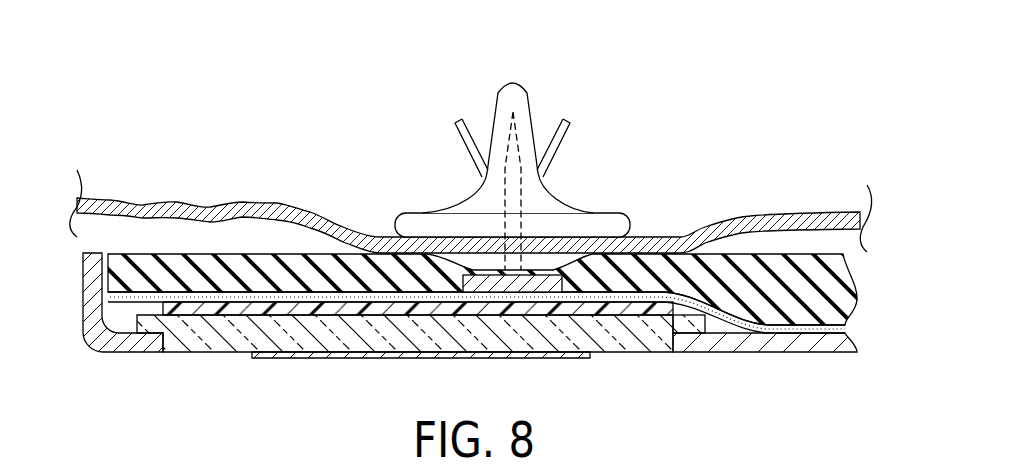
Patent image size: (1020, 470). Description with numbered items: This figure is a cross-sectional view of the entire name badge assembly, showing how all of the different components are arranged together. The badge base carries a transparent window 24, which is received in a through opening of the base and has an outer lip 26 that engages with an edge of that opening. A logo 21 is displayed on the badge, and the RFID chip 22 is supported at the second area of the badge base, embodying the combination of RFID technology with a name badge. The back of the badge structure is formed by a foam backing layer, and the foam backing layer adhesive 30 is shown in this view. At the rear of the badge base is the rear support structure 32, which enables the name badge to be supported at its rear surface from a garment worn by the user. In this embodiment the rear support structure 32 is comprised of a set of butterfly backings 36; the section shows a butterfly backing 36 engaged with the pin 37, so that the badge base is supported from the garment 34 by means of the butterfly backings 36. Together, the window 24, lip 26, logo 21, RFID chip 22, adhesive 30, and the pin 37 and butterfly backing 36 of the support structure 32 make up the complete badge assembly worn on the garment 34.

The logo 21 is at (350, 360).
The RFID chip 22 is at (547, 308).
The transparent window 24 is at (226, 365).
The outer lip 26 is at (690, 322).
The foam backing layer adhesive 30 is at (593, 168).
The rear support structure 32 is at (488, 97).
The garment 34 is at (750, 220).
The butterfly backing 36 is at (537, 121).
The pin 37 is at (502, 197).